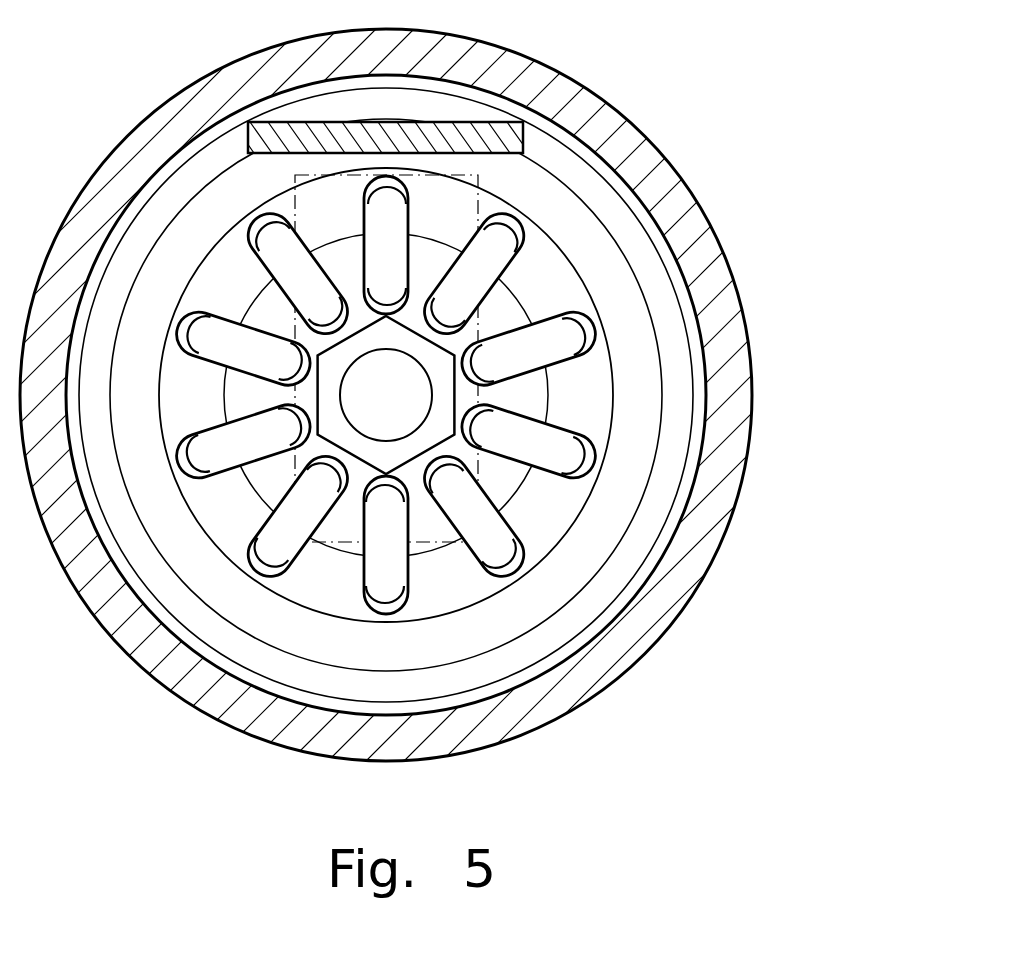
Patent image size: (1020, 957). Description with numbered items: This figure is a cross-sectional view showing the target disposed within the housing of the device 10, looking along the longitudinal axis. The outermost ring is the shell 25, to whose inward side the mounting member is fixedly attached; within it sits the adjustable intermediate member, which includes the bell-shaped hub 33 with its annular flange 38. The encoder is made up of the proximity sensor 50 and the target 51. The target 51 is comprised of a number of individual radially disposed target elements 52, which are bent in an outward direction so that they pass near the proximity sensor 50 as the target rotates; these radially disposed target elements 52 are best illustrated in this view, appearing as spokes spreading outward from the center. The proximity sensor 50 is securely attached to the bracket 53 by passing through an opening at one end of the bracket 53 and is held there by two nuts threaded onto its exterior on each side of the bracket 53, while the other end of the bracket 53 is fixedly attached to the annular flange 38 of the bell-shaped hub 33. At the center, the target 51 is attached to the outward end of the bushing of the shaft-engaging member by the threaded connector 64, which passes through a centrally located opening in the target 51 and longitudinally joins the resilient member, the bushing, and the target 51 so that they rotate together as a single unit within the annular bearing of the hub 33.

The coupling assembly 10 is at (744, 198).
The shell 25 is at (728, 277).
The bell-shaped hub 33 is at (635, 468).
The annular flange 38 is at (572, 168).
The proximity sensor 50 is at (342, 530).
The target 51 is at (526, 595).
The target elements 52 is at (505, 538).
The bracket 53 is at (485, 123).
The threaded connector 64 is at (447, 393).